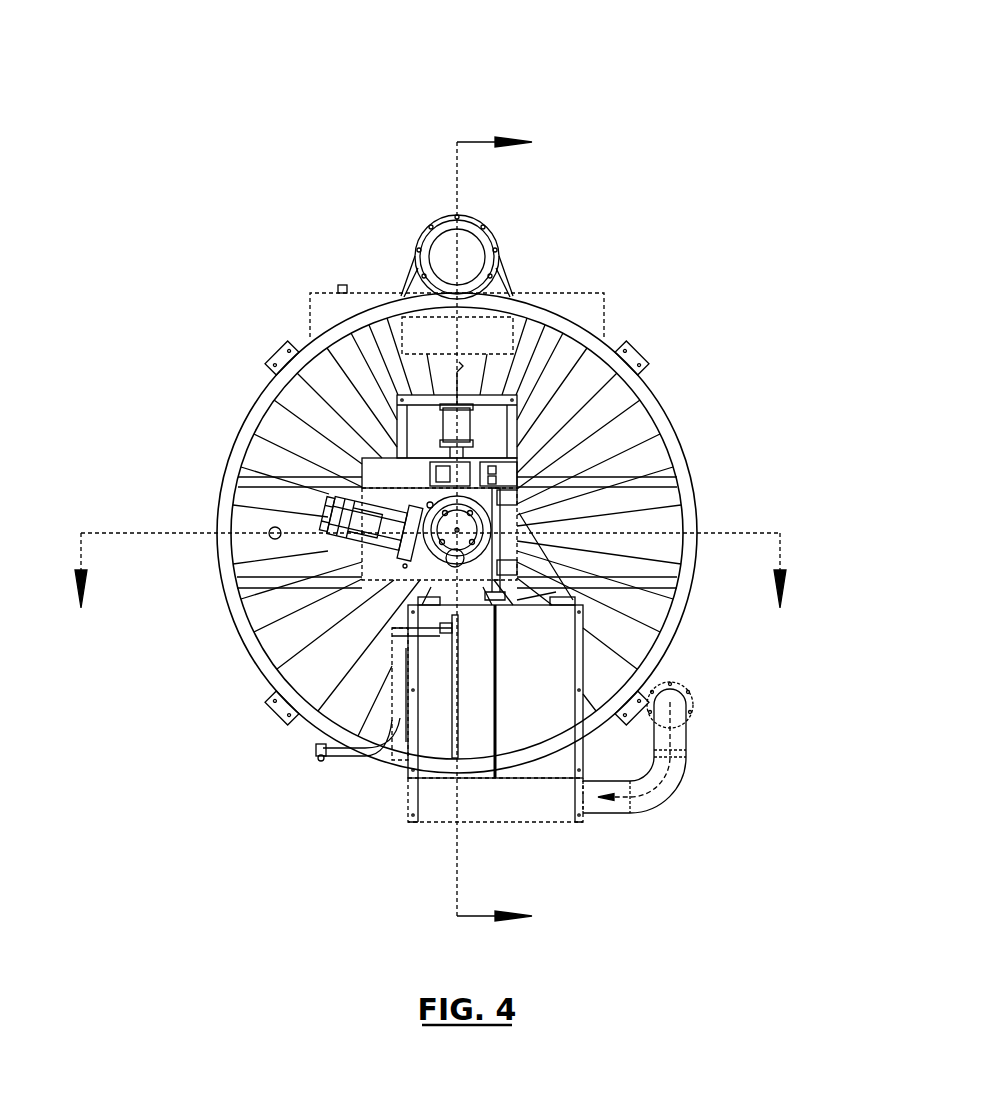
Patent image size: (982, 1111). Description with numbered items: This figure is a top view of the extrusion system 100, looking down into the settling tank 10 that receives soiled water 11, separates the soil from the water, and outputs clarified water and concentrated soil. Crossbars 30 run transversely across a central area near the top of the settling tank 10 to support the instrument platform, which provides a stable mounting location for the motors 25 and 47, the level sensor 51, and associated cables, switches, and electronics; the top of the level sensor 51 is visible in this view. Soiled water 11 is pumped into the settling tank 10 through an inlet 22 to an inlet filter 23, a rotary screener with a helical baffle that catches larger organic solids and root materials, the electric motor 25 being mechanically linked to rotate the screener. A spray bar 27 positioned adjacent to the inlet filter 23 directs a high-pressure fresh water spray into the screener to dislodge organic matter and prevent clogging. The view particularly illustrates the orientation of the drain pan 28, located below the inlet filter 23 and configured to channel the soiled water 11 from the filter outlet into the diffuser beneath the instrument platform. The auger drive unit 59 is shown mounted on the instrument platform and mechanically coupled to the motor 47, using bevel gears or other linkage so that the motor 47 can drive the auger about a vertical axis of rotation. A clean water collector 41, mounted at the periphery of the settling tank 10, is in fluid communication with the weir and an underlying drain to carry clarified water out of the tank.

The extrusion system 100 is at (582, 30).
The settling tank 10 is at (165, 473).
The soiled water 11 is at (686, 730).
The inlet 22 is at (691, 802).
The inlet filter 23 is at (437, 765).
The electric motor 25 is at (525, 446).
The spray bar 27 is at (427, 706).
The drain pan 28 is at (538, 583).
The crossbars 30 is at (672, 449).
The clean water collector 41 is at (525, 267).
The motor 47 is at (330, 467).
The level sensor 51 is at (445, 422).
The auger drive unit 59 is at (300, 690).